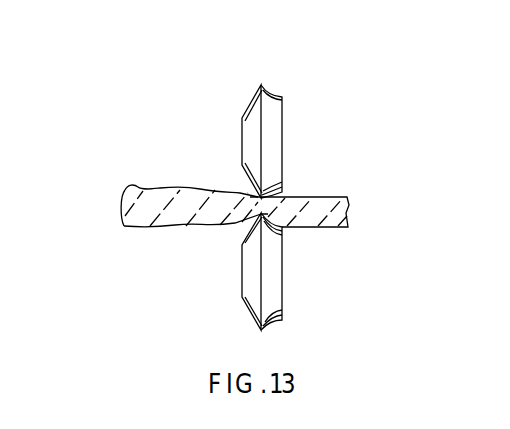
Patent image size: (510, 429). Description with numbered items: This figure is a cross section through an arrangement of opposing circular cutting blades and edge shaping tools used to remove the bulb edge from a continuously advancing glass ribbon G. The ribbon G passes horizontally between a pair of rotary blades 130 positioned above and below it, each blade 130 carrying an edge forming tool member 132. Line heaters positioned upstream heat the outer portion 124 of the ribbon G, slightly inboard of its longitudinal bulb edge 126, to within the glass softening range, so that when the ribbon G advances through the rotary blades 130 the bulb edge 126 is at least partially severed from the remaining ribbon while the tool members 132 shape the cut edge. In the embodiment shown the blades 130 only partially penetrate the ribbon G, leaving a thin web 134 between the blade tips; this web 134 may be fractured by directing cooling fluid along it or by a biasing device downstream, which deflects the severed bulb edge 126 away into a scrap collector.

The outer portion 124 is at (207, 187).
The bulb edge 126 is at (126, 194).
The rotary blade 130 is at (242, 124).
The edge forming tool member 132 is at (283, 118).
The web 134 is at (253, 215).
The glass ribbon G is at (309, 197).